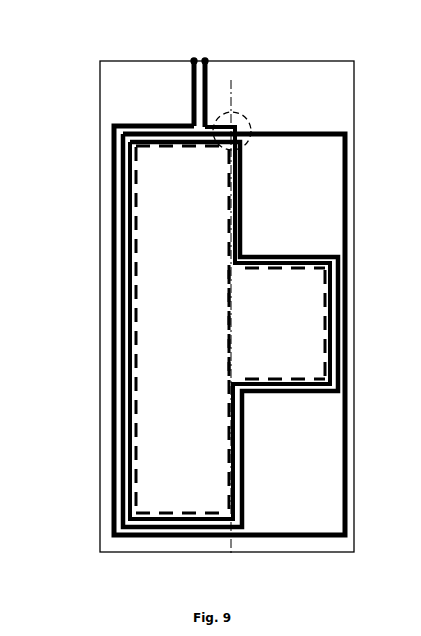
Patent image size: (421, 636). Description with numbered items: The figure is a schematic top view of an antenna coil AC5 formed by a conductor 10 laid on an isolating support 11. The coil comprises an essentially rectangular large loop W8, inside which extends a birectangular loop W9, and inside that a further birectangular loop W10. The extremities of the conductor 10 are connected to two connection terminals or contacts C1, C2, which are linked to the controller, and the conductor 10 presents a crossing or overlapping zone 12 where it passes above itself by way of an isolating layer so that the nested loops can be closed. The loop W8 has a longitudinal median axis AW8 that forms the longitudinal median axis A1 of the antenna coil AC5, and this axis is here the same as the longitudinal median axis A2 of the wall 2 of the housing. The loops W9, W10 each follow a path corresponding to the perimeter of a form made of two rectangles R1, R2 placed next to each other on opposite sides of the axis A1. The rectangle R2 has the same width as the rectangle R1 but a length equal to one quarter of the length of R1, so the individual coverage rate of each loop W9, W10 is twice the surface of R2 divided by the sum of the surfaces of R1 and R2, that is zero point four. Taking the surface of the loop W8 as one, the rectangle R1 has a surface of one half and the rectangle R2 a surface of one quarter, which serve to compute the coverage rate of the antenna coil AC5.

The wall 2 is at (198, 306).
The isolating support 11 is at (100, 282).
The conductor 10 is at (123, 125).
The crossing or overlapping zone 12 is at (253, 128).
The antenna coil AC5 is at (104, 176).
The longitudinal median axis of the antenna coil A1 is at (281, 313).
The longitudinal median axis of the wall A2 is at (281, 313).
The longitudinal median axis of the loop W8 AW8 is at (233, 90).
The connection terminal C1 is at (193, 59).
The connection terminal C2 is at (207, 59).
The large loop W8 is at (345, 420).
The birectangular loop W9 is at (338, 362).
The birectangular loop W10 is at (330, 318).
The rectangle R1 is at (140, 326).
The rectangle R2 is at (323, 358).